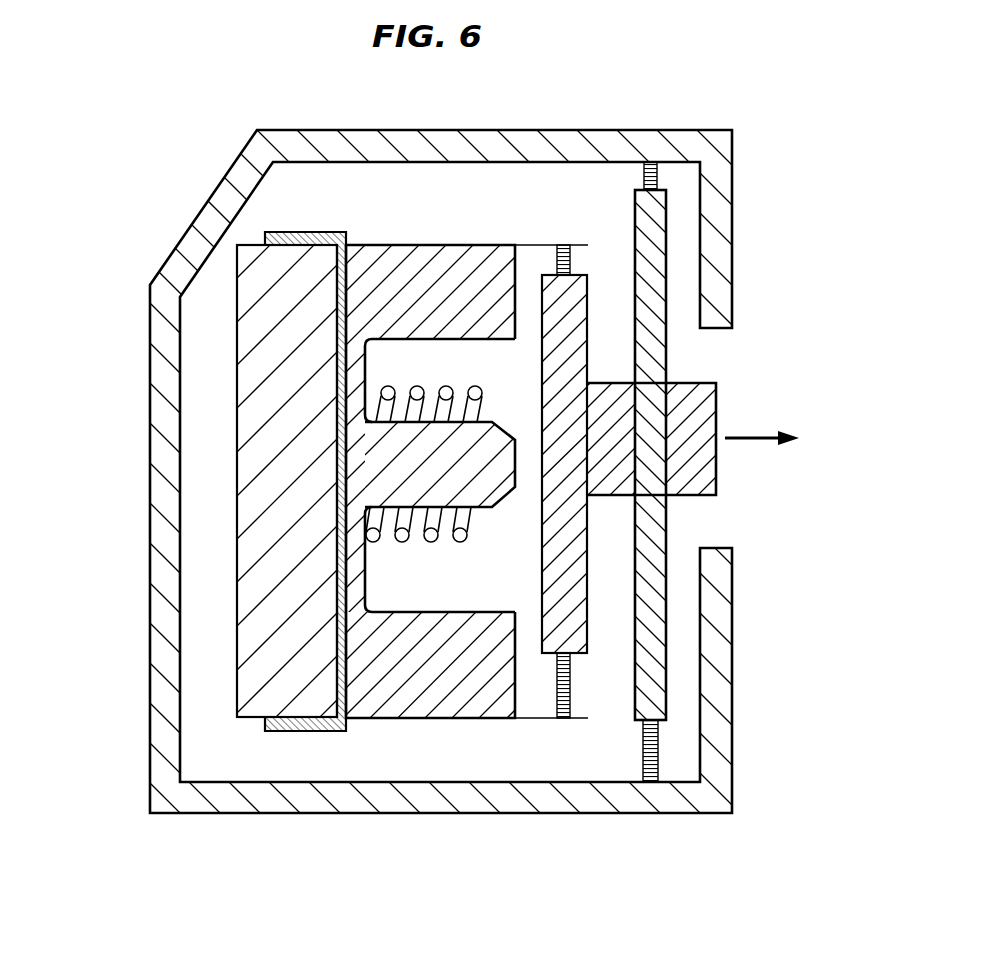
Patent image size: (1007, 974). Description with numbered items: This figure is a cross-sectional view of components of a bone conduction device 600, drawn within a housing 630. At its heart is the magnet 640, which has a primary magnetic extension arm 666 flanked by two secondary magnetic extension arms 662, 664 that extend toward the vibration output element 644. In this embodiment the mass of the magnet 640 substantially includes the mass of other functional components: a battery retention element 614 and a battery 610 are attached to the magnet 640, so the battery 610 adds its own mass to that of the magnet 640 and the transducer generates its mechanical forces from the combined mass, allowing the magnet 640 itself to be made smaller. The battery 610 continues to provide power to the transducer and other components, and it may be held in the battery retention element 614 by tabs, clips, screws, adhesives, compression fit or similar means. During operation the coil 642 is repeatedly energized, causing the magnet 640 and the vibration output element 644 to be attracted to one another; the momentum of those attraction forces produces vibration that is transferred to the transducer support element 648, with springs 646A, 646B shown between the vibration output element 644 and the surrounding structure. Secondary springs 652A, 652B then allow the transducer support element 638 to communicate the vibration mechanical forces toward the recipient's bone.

The hearing device assembly 600 is at (155, 860).
The battery 610 is at (237, 482).
The battery retention element 614 is at (302, 232).
The housing 630 is at (150, 405).
The transducer support element 638 is at (745, 440).
The magnet 640 is at (441, 487).
The coil 642 is at (422, 390).
The vibration output element 644 is at (542, 592).
The spring 646A is at (572, 262).
The spring 646B is at (572, 705).
The transducer support element 648 is at (666, 372).
The secondary spring 652A is at (643, 182).
The secondary spring 652B is at (643, 774).
The secondary magnetic extension arm 662 is at (440, 718).
The secondary magnetic extension arm 664 is at (380, 245).
The primary magnetic extension arm 666 is at (497, 422).